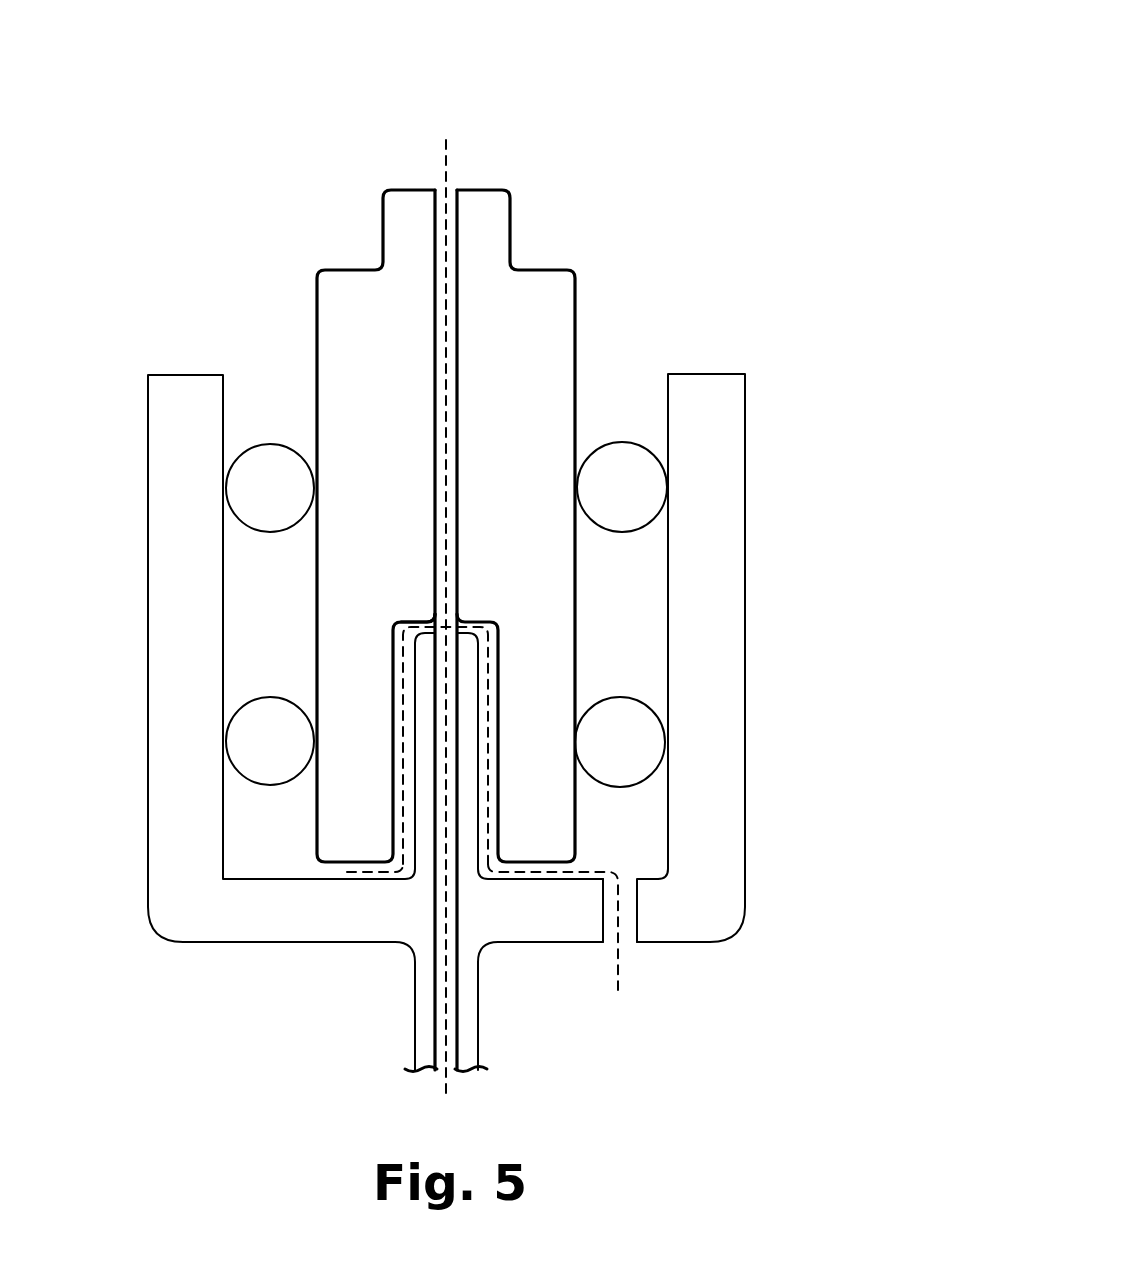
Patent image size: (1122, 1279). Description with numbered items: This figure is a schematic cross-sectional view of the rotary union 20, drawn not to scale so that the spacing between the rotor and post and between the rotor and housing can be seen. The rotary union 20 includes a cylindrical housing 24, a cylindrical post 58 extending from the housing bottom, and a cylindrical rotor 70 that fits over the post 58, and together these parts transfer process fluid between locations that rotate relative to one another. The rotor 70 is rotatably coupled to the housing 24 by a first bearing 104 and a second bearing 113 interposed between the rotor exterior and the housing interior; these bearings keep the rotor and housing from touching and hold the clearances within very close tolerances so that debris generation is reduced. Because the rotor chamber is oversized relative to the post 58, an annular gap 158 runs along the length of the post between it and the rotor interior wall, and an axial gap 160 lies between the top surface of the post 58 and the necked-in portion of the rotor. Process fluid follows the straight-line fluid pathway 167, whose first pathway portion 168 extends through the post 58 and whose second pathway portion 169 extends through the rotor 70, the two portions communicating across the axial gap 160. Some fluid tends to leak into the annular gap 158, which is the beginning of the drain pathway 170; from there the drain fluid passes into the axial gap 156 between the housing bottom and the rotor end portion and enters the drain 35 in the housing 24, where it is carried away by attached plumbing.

The rotary union 20 is at (688, 78).
The cylindrical housing 24 is at (722, 467).
The drain 35 is at (620, 918).
The cylindrical post 58 is at (473, 813).
The cylindrical rotor 70 is at (552, 300).
The first bearing 104 is at (240, 488).
The second bearing 113 is at (648, 742).
The axial gap 156 is at (350, 872).
The annular gap 158 is at (398, 766).
The axial gap 160 is at (421, 620).
The fluid pathway 167 is at (447, 619).
The first pathway portion 168 is at (463, 748).
The second pathway portion 169 is at (458, 296).
The drain pathway 170 is at (574, 951).